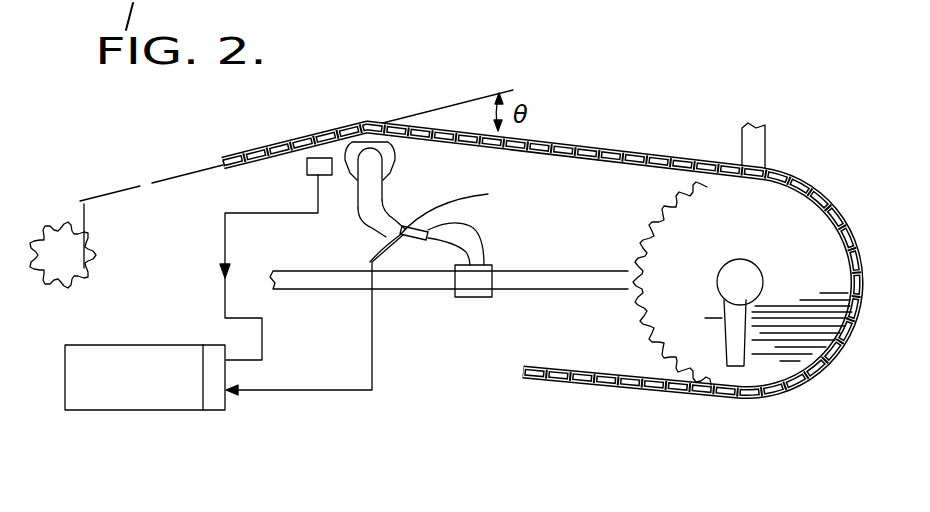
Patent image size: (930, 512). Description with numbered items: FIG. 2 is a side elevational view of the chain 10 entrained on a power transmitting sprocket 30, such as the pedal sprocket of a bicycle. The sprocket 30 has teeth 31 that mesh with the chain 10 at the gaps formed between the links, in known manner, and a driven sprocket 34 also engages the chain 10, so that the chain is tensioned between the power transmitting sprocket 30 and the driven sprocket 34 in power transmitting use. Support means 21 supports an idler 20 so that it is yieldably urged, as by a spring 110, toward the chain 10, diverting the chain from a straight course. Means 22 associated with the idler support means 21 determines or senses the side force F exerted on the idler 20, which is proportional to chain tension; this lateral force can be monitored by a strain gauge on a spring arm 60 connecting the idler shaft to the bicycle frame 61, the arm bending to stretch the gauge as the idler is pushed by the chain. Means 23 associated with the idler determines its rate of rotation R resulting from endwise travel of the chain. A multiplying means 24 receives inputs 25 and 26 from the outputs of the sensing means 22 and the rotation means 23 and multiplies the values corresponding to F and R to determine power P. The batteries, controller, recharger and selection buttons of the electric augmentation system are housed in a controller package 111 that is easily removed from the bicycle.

The chain 10 is at (600, 138).
The idler 20 is at (395, 160).
The support means 21 is at (363, 200).
The side force sensing means 22 is at (417, 240).
The rotation rate determining means 23 is at (309, 158).
The multiplying means 24 is at (215, 402).
The input 25 is at (342, 390).
The input 26 is at (223, 228).
The power transmitting sprocket 30 is at (742, 283).
The teeth 31 is at (632, 313).
The driven sprocket 34 is at (70, 252).
The spring arm 60 is at (485, 233).
The bicycle frame 61 is at (508, 282).
The spring 110 is at (488, 194).
The controller package 111 is at (95, 398).